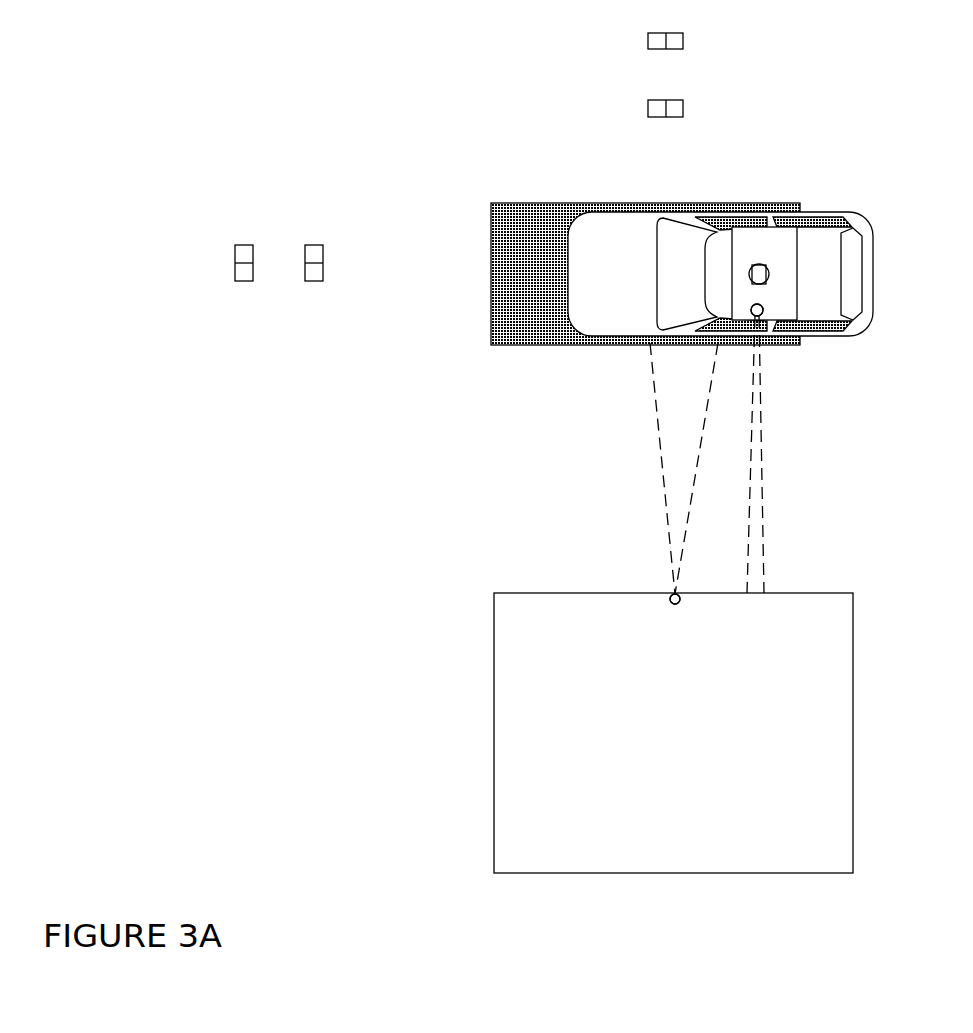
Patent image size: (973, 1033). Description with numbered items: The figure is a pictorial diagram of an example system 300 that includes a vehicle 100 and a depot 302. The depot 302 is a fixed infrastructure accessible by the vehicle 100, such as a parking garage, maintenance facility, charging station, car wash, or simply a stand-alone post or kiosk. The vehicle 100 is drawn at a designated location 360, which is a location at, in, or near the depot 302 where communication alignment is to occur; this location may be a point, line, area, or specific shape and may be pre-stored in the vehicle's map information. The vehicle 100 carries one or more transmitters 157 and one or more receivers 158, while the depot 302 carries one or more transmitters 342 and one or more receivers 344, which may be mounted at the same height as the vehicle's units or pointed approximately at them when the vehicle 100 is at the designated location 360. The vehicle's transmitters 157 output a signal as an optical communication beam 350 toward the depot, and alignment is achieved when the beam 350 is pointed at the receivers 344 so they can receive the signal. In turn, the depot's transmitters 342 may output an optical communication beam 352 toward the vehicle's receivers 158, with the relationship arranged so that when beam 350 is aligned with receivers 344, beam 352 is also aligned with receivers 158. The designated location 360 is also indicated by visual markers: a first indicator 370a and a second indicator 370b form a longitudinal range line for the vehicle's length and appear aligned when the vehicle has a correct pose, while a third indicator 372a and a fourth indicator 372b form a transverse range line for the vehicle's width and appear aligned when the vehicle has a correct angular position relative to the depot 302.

The system 300 is at (150, 895).
The third indicator 372a is at (648, 48).
The fourth indicator 372b is at (648, 116).
The first indicator 370a is at (240, 255).
The second indicator 370b is at (313, 282).
The designated location 360 is at (504, 218).
The vehicle 100 is at (752, 212).
The one or more transmitters 157 is at (762, 315).
The one or more receivers 158 is at (875, 366).
The optical communication beam 350 is at (756, 466).
The optical communication beam 352 is at (677, 513).
The one or more transmitters 342 is at (670, 598).
The one or more receivers 344 is at (670, 598).
The depot 302 is at (692, 730).